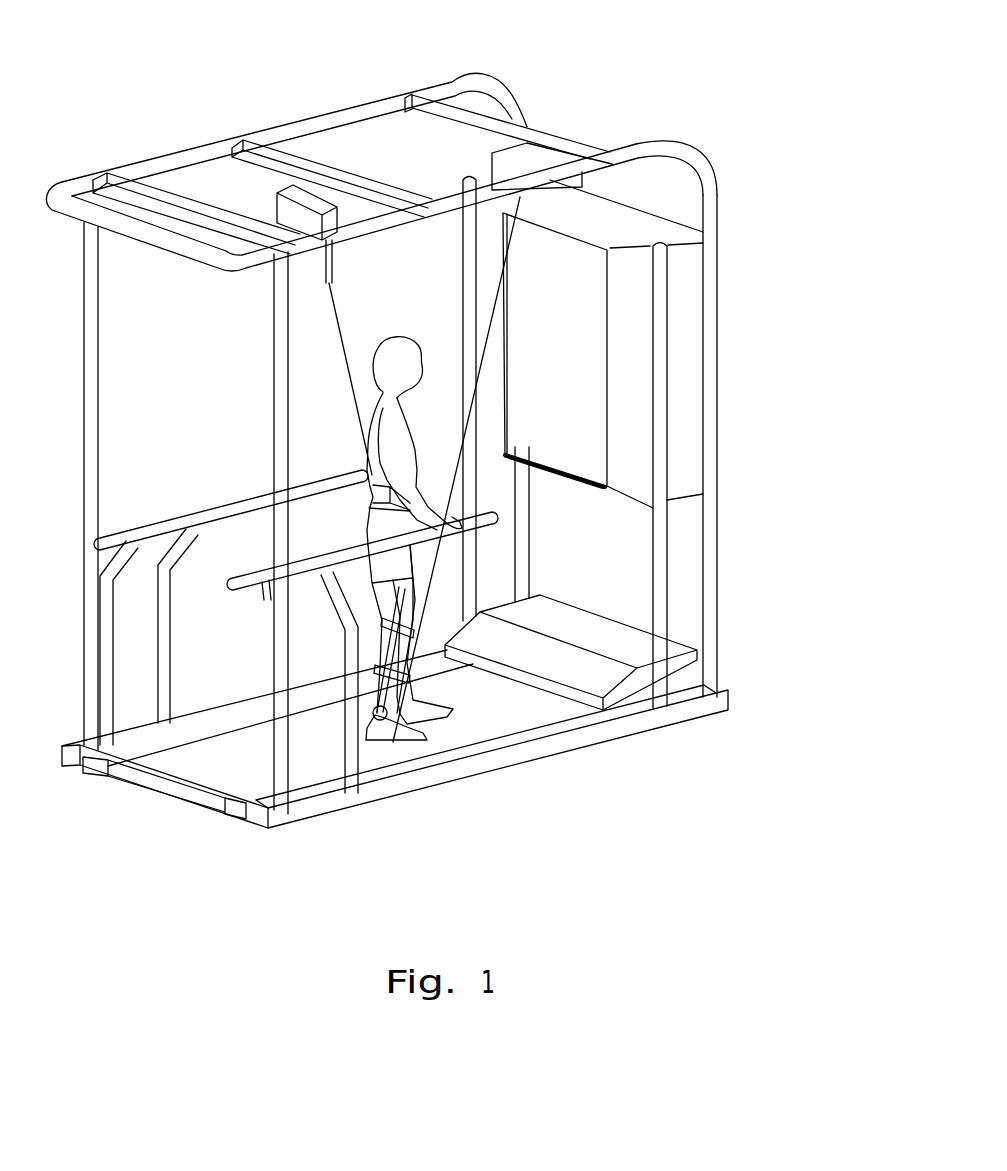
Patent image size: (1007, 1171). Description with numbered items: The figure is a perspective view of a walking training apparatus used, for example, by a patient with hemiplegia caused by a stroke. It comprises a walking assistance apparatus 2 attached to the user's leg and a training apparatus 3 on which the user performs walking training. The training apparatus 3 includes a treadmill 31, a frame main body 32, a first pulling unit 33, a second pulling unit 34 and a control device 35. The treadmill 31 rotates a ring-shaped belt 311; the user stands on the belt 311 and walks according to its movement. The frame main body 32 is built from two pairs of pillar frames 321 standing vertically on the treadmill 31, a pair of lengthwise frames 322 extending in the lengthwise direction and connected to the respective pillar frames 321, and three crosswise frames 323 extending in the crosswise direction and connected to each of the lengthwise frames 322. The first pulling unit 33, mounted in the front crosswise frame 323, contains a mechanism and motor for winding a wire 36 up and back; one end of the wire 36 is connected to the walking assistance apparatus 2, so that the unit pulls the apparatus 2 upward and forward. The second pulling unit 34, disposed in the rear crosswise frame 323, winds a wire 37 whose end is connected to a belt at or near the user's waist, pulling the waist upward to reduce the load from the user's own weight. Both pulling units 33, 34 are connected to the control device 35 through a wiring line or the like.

The walking assistance apparatus 2 is at (368, 566).
The training apparatus 3 is at (691, 90).
The treadmill 31 is at (530, 722).
The belt 311 is at (187, 772).
The frame main body 32 is at (718, 568).
The pillar frames 321 is at (280, 473).
The lengthwise frames 322 is at (367, 107).
The crosswise frames 323 is at (140, 178).
The first pulling unit 33 is at (540, 157).
The second pulling unit 34 is at (290, 207).
The control device 35 is at (697, 388).
The wire 36 is at (486, 318).
The wire 37 is at (365, 408).